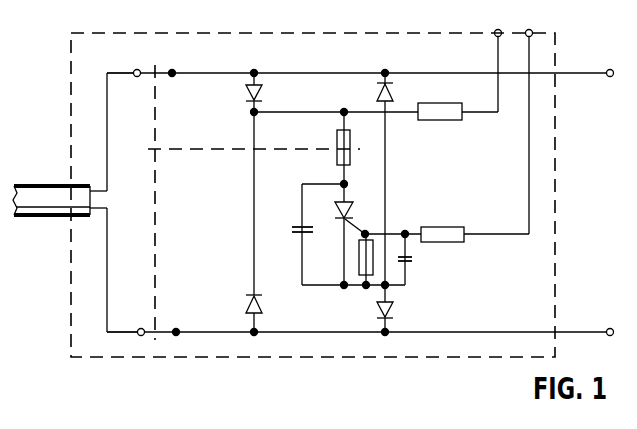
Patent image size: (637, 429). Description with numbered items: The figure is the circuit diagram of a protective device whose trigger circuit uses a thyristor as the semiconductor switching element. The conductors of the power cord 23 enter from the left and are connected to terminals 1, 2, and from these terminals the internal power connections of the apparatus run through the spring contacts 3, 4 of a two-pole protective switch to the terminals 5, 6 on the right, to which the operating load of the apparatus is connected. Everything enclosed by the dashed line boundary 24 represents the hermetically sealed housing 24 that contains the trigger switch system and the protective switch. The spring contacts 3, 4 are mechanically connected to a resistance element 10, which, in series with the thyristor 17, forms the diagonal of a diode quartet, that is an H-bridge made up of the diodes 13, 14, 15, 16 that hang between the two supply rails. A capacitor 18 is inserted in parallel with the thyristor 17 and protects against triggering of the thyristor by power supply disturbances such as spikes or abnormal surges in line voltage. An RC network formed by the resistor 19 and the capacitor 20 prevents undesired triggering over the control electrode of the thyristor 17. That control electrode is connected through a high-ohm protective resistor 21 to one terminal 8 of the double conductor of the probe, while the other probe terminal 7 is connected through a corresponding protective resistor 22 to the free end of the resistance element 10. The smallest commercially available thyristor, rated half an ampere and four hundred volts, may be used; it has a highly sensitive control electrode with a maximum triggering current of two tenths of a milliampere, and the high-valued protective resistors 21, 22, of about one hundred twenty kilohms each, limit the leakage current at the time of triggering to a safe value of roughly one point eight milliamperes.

The terminal 1 is at (135, 76).
The terminal 2 is at (138, 331).
The spring contact 3 is at (143, 58).
The spring contact 4 is at (144, 333).
The terminal 5 is at (609, 77).
The terminal 6 is at (610, 328).
The terminal 7 is at (495, 37).
The terminal 8 is at (528, 37).
The resistance element 10 is at (338, 133).
The diode 13 is at (246, 91).
The diode 14 is at (378, 92).
The diode 15 is at (247, 305).
The diode 16 is at (378, 308).
The thyristor 17 is at (351, 210).
The capacitor 18 is at (294, 230).
The resistor of RC network 19 is at (360, 256).
The capacitor of RC network 20 is at (414, 259).
The protective resistor 21 is at (440, 228).
The protective resistor 22 is at (446, 117).
The power cord 23 is at (47, 200).
The housing 24 is at (555, 205).